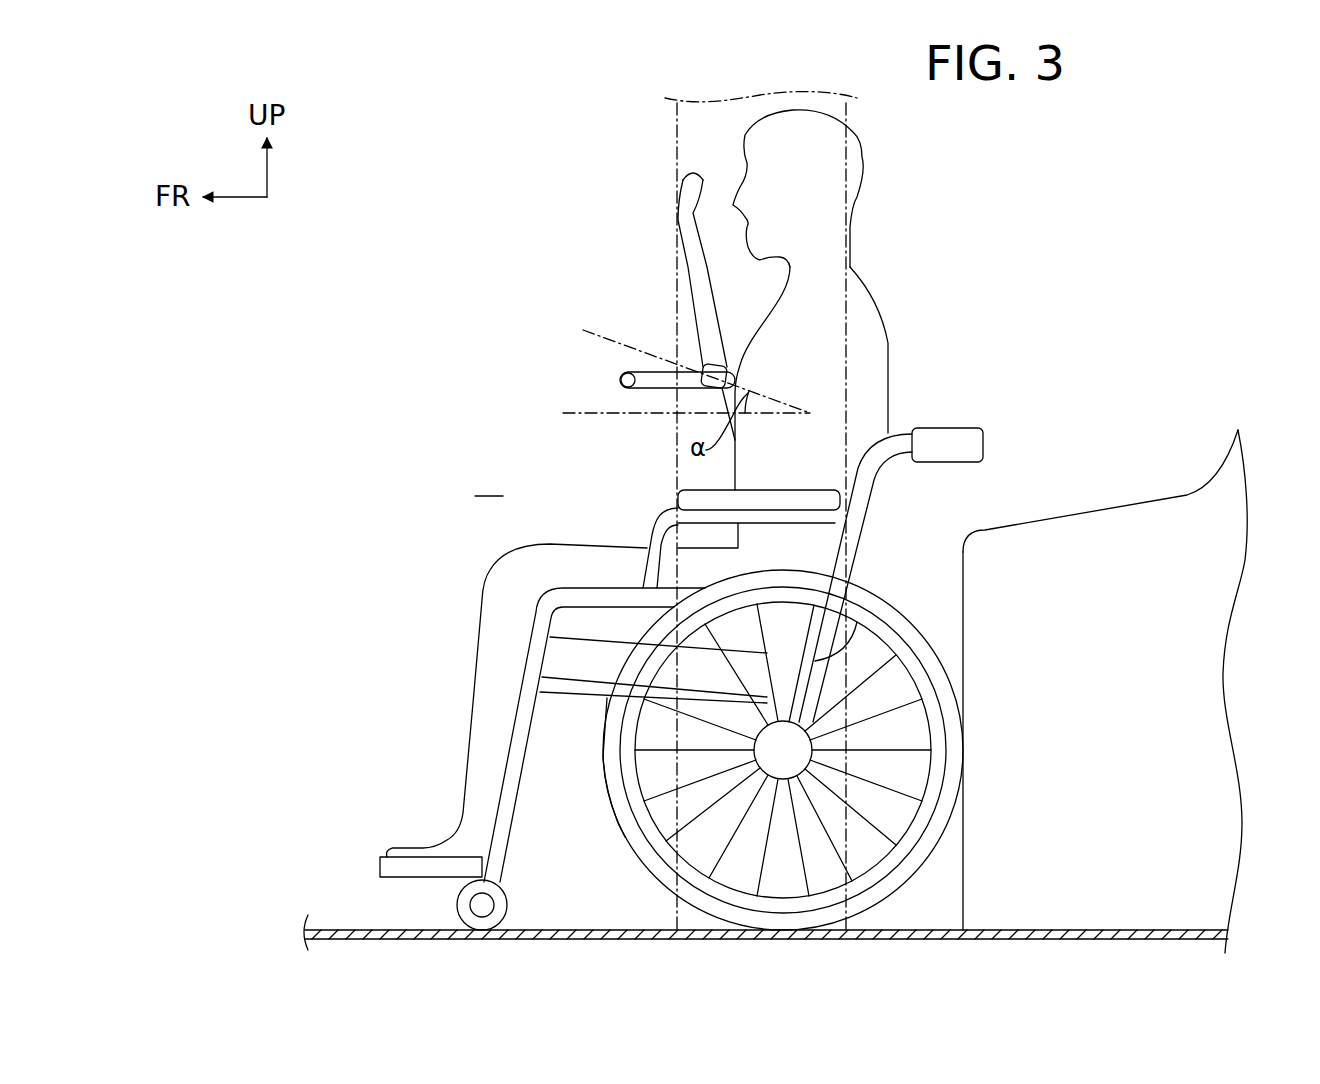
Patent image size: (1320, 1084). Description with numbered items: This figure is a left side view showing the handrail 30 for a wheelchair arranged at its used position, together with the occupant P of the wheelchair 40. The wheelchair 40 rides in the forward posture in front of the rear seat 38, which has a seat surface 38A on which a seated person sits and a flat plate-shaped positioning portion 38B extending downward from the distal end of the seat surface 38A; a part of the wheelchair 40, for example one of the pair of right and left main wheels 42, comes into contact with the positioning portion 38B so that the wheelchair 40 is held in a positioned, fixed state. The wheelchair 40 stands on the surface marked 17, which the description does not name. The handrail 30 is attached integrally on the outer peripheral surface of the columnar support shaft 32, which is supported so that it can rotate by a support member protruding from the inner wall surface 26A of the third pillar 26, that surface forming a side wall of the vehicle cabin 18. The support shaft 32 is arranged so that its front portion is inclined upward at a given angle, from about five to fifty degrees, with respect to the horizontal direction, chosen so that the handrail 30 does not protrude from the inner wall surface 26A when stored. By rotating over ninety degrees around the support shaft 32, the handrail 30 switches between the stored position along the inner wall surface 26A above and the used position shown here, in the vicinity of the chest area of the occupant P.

The floor 17 is at (347, 930).
The vehicle cabin 18 is at (713, 634).
The third pillar 26 is at (853, 110).
The inner wall surface 26A is at (690, 133).
The handrail 30 is at (681, 178).
The support shaft 32 is at (702, 365).
The rear seat 38 is at (1097, 659).
The seat surface 38A is at (1065, 517).
The positioning portion 38B is at (963, 858).
The wheelchair 40 is at (960, 422).
The main wheel 42 is at (925, 640).
The occupant P is at (853, 178).